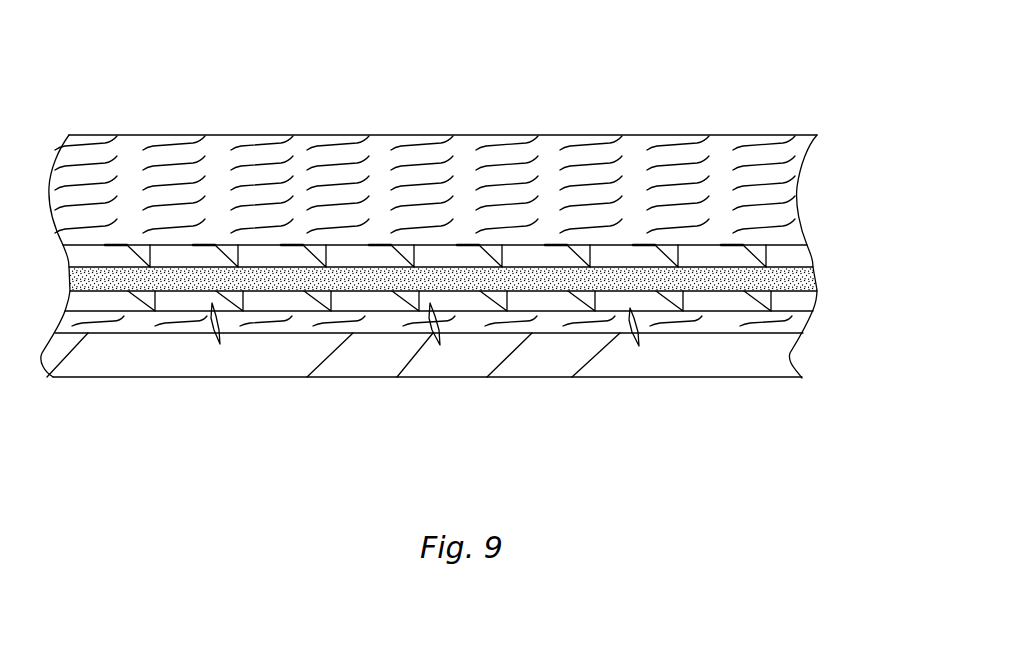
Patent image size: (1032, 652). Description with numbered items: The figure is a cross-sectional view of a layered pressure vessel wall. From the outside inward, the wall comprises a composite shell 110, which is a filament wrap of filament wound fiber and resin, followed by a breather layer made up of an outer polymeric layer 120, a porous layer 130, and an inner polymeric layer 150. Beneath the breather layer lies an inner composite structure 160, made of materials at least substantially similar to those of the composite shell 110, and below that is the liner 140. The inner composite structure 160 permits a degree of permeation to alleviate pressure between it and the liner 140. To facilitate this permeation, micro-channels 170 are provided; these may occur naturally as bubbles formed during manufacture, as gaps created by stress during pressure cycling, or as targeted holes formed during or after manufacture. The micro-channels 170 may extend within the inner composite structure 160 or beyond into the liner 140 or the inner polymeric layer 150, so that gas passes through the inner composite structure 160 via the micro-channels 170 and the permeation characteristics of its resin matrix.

The composite shell 110 is at (633, 163).
The outer polymeric layer 120 is at (795, 253).
The porous layer 130 is at (798, 276).
The liner 140 is at (158, 357).
The inner polymeric layer 150 is at (795, 300).
The inner composite structure 160 is at (725, 323).
The micro-channels 170 is at (634, 352).